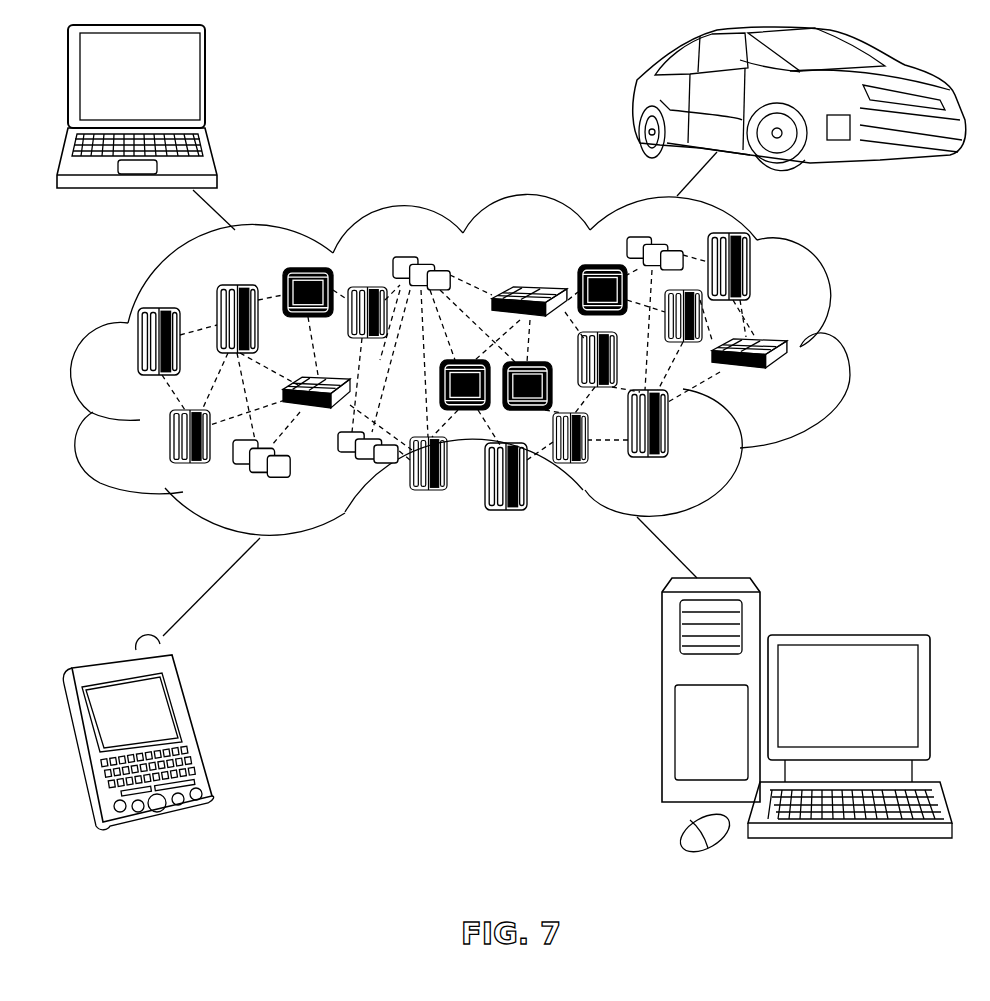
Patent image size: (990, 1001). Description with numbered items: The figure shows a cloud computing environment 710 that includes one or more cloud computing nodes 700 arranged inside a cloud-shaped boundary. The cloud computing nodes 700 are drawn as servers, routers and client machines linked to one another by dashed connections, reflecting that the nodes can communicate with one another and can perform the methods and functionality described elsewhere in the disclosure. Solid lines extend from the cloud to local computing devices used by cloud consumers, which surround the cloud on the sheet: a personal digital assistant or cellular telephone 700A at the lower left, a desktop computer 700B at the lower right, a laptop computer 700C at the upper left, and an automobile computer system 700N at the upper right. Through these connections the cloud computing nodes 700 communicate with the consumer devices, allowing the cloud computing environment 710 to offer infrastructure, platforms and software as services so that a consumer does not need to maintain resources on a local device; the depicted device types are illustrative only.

The cloud computing nodes 700 is at (790, 382).
The cloud computing environment 710 is at (843, 353).
The personal digital assistant (PDA) or cellular telephone 700A is at (197, 727).
The desktop computer 700B is at (847, 632).
The laptop computer 700C is at (205, 85).
The automobile computer system 700N is at (635, 95).